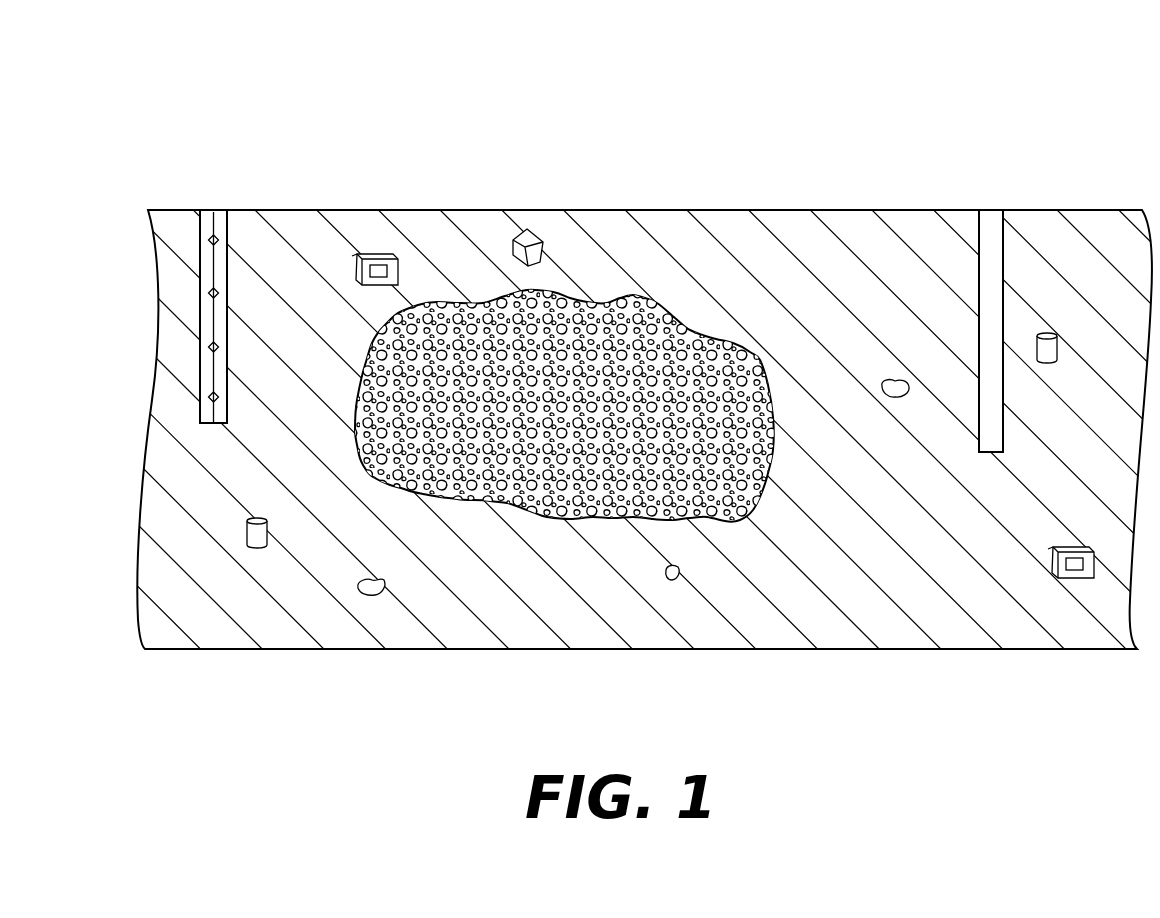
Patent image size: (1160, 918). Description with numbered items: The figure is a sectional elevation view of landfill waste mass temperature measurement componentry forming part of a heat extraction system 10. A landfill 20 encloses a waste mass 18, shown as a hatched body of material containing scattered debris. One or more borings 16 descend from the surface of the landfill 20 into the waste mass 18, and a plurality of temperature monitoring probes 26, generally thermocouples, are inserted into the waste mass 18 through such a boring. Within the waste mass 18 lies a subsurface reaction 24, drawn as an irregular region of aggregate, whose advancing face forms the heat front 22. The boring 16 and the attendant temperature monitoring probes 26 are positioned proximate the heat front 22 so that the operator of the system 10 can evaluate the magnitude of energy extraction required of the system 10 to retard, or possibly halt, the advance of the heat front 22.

The heat extraction system 10 is at (907, 85).
The boring 16 is at (987, 227).
The waste mass 18 is at (1068, 633).
The landfill 20 is at (350, 211).
The heat front 22 is at (780, 427).
The subsurface reaction 24 is at (600, 350).
The temperature monitoring probes 26 is at (227, 232).